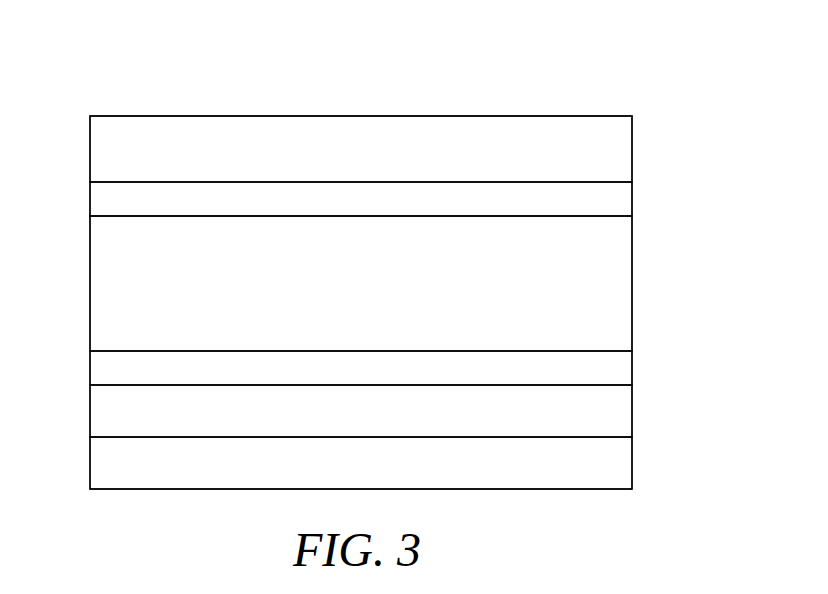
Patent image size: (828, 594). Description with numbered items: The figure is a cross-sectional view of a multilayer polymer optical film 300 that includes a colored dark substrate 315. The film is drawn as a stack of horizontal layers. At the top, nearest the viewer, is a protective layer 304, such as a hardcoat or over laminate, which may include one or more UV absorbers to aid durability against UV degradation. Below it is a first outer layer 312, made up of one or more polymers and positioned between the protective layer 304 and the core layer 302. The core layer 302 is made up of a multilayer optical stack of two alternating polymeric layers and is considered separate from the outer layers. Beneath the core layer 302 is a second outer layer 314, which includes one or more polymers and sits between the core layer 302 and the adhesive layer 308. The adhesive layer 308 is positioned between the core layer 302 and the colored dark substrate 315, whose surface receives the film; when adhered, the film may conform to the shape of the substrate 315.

The multilayer polymer optical film 300 is at (140, 54).
The protective layer 304 is at (607, 151).
The first outer layer 312 is at (607, 199).
The core layer 302 is at (607, 284).
The second outer layer 314 is at (607, 369).
The adhesive layer 308 is at (607, 408).
The colored dark substrate 315 is at (607, 461).